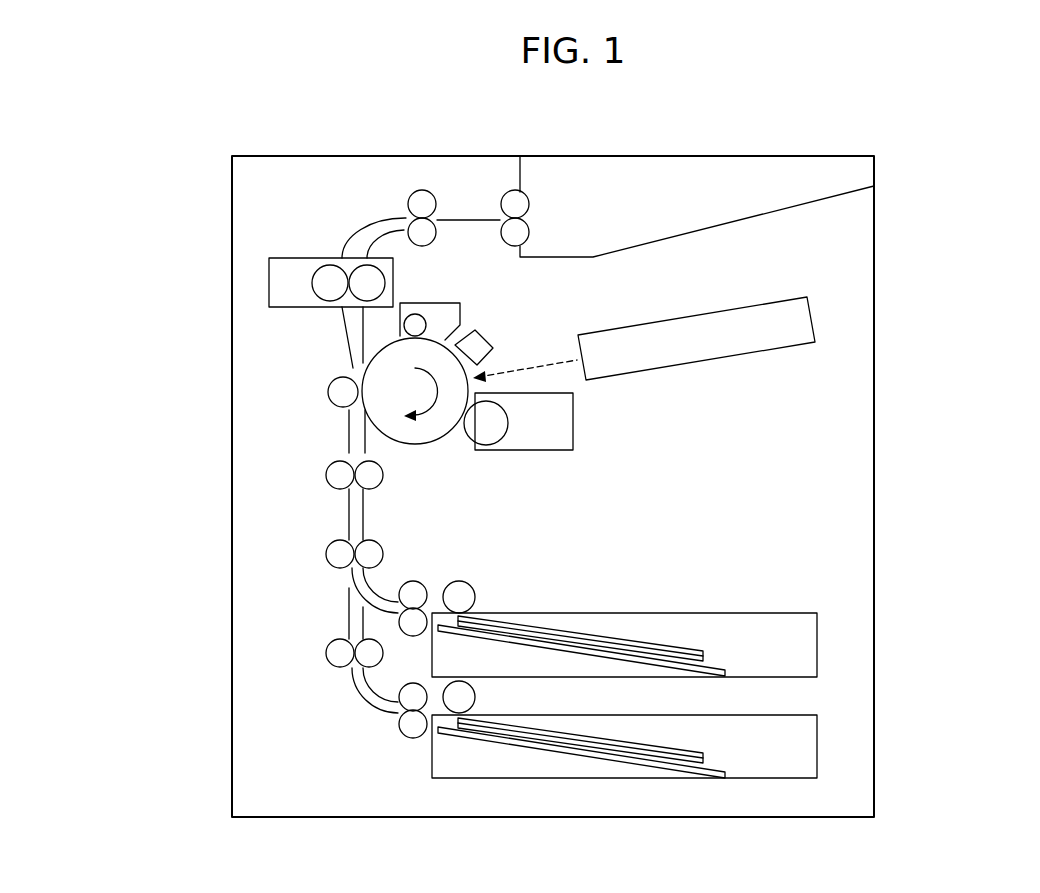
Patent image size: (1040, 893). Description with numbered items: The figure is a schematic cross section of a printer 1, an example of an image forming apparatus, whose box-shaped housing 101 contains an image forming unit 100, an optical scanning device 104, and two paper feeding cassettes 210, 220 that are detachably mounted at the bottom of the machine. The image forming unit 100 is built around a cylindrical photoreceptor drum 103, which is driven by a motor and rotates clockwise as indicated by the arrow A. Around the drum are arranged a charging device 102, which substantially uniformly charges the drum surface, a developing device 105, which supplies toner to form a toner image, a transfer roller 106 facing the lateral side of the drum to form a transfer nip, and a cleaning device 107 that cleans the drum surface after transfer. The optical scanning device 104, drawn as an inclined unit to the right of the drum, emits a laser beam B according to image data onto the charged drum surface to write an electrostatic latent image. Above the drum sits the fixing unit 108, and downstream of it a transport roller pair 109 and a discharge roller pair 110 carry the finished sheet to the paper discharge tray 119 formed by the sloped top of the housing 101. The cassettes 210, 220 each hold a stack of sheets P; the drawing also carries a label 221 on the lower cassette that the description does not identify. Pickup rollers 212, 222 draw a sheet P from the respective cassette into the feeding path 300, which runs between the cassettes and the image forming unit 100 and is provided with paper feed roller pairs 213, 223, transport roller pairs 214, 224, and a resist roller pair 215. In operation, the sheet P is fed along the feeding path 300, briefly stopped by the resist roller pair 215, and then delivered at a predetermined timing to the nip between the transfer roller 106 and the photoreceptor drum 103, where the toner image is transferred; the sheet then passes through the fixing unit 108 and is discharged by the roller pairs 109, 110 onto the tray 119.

The printer 1 is at (819, 120).
The image forming unit 100 is at (574, 305).
The housing 101 is at (874, 258).
The charging device 102 is at (488, 332).
The photoreceptor drum 103 is at (371, 353).
The optical scanning device 104 is at (733, 355).
The developing device 105 is at (536, 450).
The transfer roller 106 is at (328, 388).
The cleaning device 107 is at (431, 303).
The fixing unit 108 is at (269, 283).
The transport roller pair 109 is at (410, 190).
The discharge roller pair 110 is at (528, 196).
The paper discharge tray 119 is at (702, 225).
The paper feeding cassette 210 is at (778, 613).
The pickup roller 212 is at (475, 582).
The paper feed roller pair 213 is at (418, 581).
The transport roller pair 214 is at (327, 547).
The resist roller pair 215 is at (327, 468).
The paper feeding cassette 220 is at (757, 715).
The sheet stacking plate 221 is at (572, 750).
The pickup roller 222 is at (478, 696).
The paper feed roller pair 223 is at (412, 738).
The transport roller pair 224 is at (327, 648).
The feeding path 300 is at (396, 561).
The arrow A is at (410, 397).
The laser beam B is at (547, 362).
The sheet P is at (650, 642).